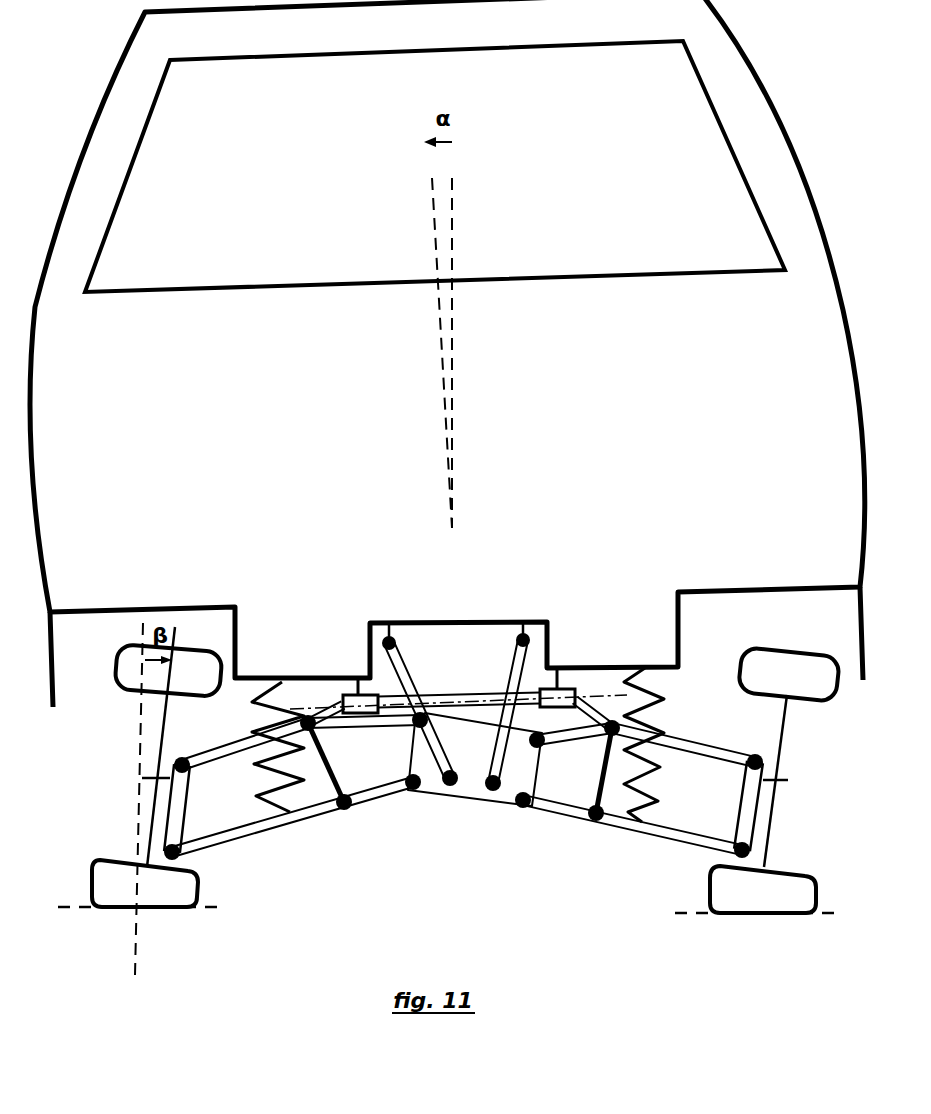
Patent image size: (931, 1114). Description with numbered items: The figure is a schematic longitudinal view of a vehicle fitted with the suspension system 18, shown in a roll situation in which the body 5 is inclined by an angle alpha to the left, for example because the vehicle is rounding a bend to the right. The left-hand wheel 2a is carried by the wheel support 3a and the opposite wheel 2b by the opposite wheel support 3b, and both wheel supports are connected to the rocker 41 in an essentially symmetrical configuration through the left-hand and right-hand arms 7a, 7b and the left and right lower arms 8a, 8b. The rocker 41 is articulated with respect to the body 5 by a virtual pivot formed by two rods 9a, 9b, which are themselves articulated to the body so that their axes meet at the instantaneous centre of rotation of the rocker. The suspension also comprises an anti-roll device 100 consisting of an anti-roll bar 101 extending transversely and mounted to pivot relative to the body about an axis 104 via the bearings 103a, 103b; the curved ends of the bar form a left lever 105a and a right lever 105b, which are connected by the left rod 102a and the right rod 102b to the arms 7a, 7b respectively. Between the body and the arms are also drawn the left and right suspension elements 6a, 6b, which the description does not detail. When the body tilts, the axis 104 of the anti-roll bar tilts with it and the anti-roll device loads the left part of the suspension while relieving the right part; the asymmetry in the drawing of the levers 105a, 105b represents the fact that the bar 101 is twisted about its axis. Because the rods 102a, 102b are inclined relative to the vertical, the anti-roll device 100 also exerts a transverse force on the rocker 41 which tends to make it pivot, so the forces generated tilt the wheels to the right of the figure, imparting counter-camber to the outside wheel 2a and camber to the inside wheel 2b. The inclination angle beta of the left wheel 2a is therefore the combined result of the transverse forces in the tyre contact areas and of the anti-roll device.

The body 5 is at (277, 474).
The anti-roll device 100 is at (380, 578).
The anti-roll bar 101 is at (443, 693).
The axis 104 is at (462, 700).
The left bearing 103a is at (348, 693).
The right bearing 103b is at (560, 688).
The left lever 105a is at (316, 712).
The right lever 105b is at (600, 700).
The left rod 102a is at (330, 785).
The right rod 102b is at (604, 778).
The rod 9a is at (403, 666).
The rod 9b is at (515, 675).
The rocker 41 is at (447, 793).
The left-hand arm 7a is at (350, 735).
The right-hand arm 7b is at (683, 757).
The left lower arm 8a is at (328, 812).
The right lower arm 8b is at (565, 810).
The wheel support 3a is at (190, 798).
The opposite wheel support 3b is at (746, 802).
The left spring 6a is at (262, 732).
The right spring 6b is at (655, 720).
The left-hand wheel 2a is at (115, 664).
The opposite wheel 2b is at (788, 720).
The suspension system 18 is at (509, 868).